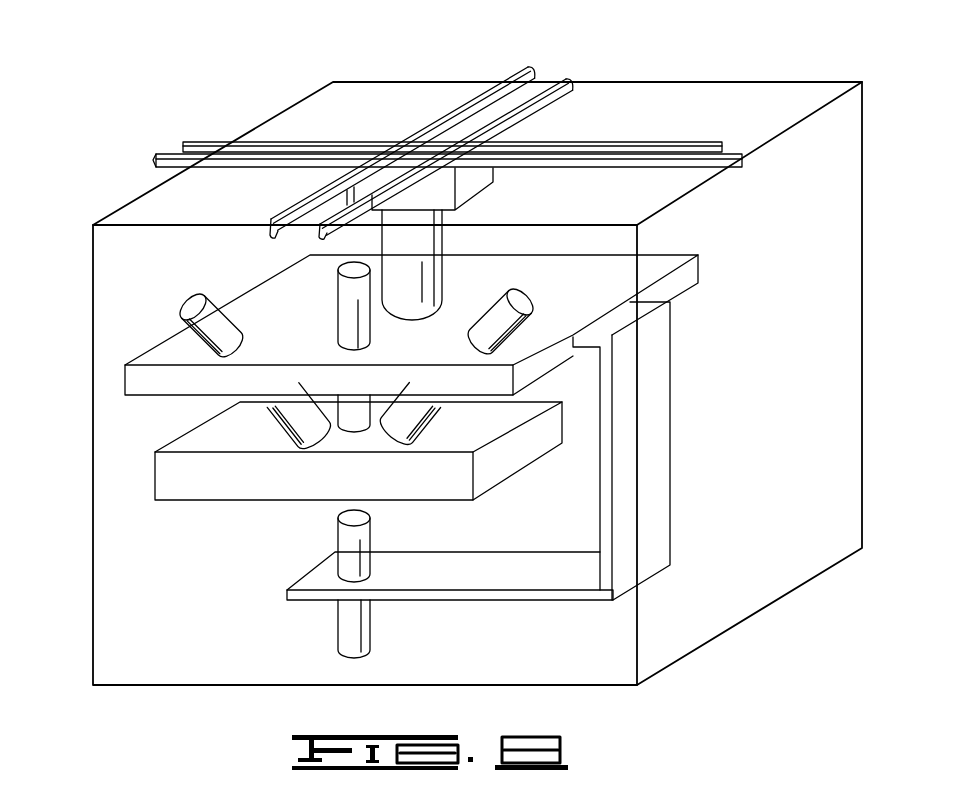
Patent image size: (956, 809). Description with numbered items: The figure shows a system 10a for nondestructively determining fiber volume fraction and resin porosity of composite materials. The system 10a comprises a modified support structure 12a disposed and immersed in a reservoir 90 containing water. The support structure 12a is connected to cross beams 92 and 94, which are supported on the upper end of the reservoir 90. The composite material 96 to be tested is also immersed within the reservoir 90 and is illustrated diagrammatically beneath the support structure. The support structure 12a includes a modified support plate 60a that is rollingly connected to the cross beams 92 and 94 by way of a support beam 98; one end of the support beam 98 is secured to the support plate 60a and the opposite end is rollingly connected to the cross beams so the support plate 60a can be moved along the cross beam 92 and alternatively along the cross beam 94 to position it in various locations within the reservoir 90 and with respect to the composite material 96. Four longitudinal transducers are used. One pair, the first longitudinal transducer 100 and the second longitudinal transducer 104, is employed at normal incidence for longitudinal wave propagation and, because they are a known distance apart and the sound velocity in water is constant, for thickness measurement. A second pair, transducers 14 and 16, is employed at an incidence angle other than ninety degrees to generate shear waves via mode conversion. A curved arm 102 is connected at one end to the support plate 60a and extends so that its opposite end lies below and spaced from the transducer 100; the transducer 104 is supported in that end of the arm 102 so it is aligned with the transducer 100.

The system 10a is at (284, 97).
The support structure 12a is at (692, 246).
The longitudinal transducer 14 is at (195, 303).
The longitudinal transducer 16 is at (522, 303).
The support plate 60a is at (148, 352).
The reservoir 90 is at (707, 638).
The cross beam 92 is at (593, 141).
The cross beam 94 is at (517, 70).
The composite material 96 is at (320, 488).
The support beam 98 is at (417, 288).
The first longitudinal transducer 100 is at (353, 310).
The curved arm 102 is at (658, 412).
The second longitudinal transducer 104 is at (355, 632).